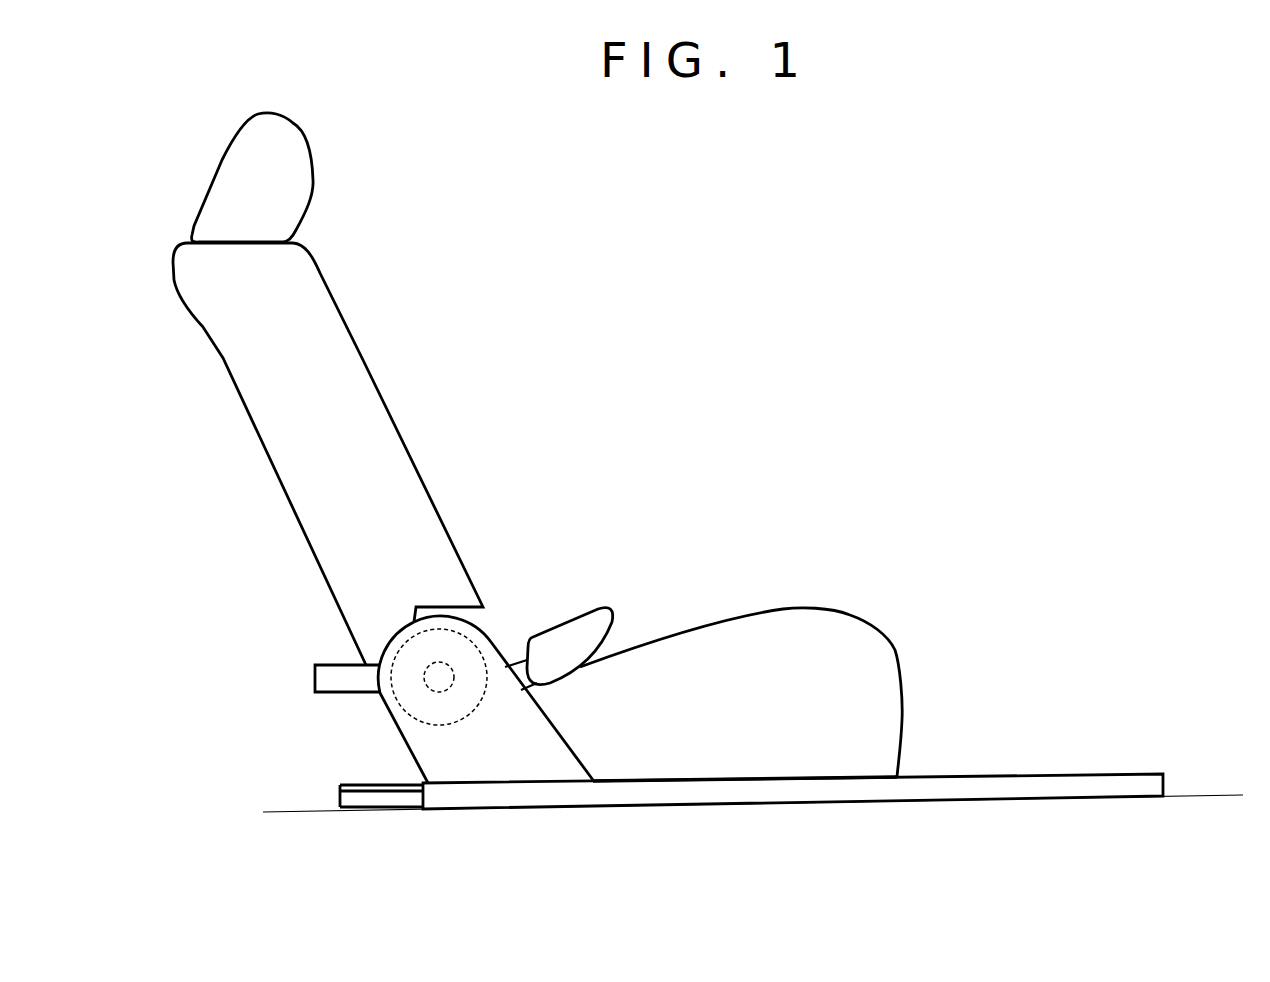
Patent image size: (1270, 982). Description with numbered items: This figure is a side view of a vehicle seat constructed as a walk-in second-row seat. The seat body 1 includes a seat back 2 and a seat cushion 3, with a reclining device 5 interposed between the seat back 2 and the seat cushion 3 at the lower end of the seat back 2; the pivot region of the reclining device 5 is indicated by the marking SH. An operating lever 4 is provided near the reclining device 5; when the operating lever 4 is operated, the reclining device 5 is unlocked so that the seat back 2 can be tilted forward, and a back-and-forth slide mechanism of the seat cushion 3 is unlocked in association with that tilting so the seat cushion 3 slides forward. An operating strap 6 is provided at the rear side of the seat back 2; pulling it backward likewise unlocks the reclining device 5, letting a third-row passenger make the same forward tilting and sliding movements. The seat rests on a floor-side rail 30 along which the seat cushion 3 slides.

The seat body 1 is at (668, 305).
The seat back 2 is at (372, 413).
The seat cushion 3 is at (798, 633).
The operating lever 4 is at (588, 623).
The reclining device 5 is at (444, 636).
The shaft SH is at (495, 665).
The operating strap 6 is at (333, 677).
The slide rail 30 is at (1013, 788).